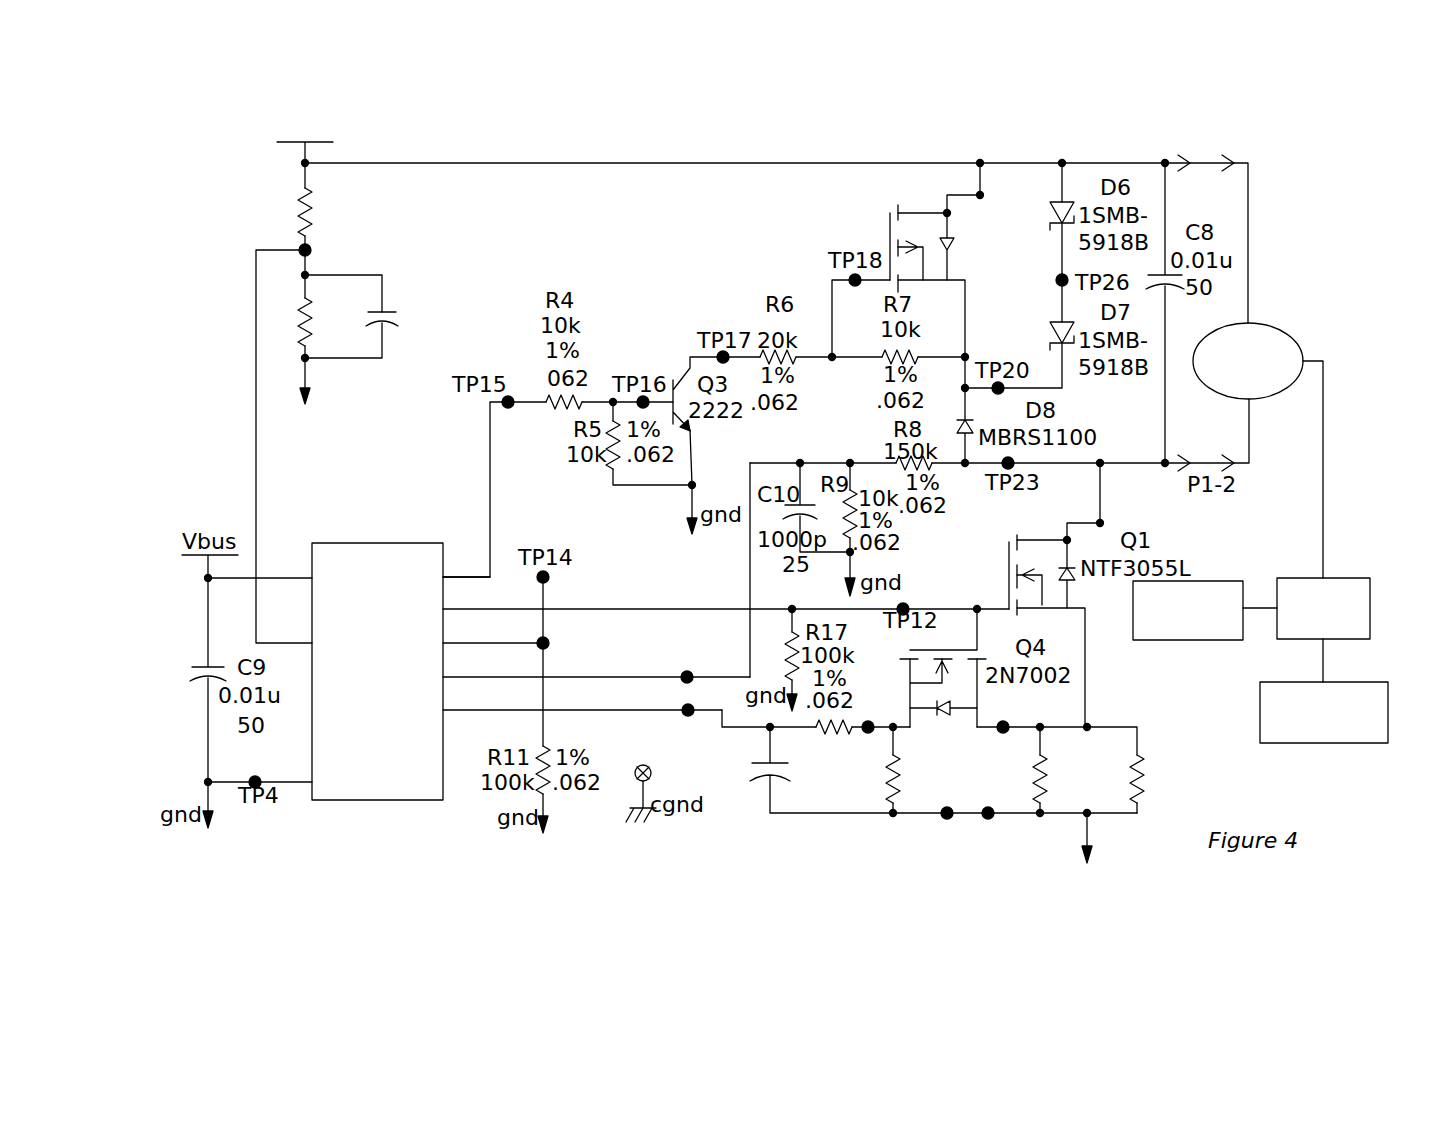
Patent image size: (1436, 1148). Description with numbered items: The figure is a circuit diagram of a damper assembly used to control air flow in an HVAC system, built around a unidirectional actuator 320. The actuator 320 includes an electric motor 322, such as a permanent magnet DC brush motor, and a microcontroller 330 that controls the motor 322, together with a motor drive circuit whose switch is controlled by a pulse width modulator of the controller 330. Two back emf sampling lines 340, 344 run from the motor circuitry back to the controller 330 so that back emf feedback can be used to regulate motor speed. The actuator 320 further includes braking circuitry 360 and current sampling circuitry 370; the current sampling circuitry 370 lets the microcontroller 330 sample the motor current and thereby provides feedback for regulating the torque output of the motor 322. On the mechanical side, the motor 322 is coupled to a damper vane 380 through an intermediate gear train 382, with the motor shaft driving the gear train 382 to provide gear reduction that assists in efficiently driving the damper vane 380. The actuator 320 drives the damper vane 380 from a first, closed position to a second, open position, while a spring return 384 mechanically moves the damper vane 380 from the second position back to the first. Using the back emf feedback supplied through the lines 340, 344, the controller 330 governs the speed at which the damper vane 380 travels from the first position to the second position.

The unidirectional actuator 320 is at (652, 156).
The electric motor 322 is at (1280, 330).
The microcontroller 330 is at (430, 543).
The back emf sampling line 340 is at (383, 163).
The back emf sampling line 344 is at (750, 575).
The braking circuitry 360 is at (848, 218).
The current sampling circuitry 370 is at (802, 821).
The damper vane 380 is at (1323, 745).
The gear train 382 is at (1353, 578).
The spring return 384 is at (1213, 578).